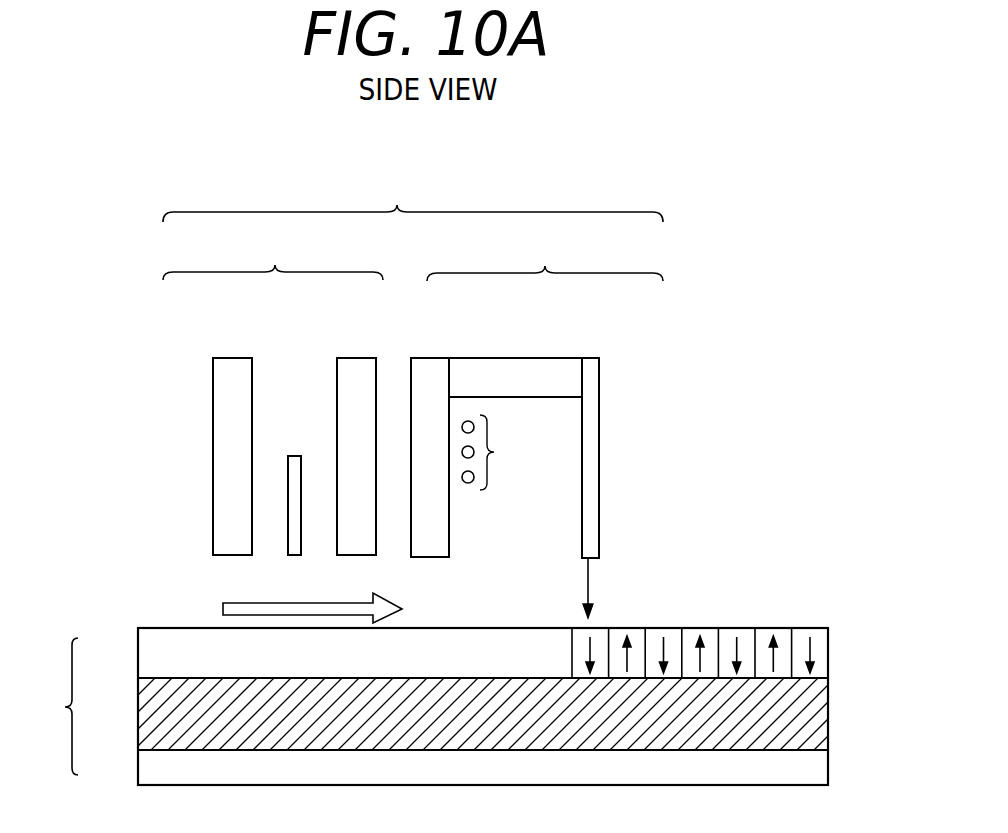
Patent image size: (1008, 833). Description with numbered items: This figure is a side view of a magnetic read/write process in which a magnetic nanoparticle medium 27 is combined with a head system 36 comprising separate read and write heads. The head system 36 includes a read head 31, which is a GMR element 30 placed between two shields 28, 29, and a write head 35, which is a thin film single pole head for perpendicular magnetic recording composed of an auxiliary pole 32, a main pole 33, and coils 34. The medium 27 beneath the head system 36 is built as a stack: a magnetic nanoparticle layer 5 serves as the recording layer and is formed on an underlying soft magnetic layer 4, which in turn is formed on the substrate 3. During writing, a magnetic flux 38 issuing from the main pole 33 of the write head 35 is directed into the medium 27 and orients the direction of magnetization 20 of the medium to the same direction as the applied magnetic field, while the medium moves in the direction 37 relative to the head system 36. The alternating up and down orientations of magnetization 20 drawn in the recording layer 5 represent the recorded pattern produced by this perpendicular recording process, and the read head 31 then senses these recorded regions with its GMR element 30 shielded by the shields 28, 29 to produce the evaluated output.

The head system 36 is at (413, 196).
The read head 31 is at (273, 257).
The write head 35 is at (545, 258).
The shield 28 is at (231, 366).
The GMR element 30 is at (292, 462).
The shield 29 is at (365, 370).
The auxiliary pole 32 is at (428, 370).
The coils 34 is at (496, 452).
The main pole 33 is at (600, 408).
The direction of medium movement 37 is at (393, 600).
The magnetic flux 38 is at (590, 583).
The magnetic nanoparticle medium 27 is at (429, 706).
The magnetic nanoparticle layer 5 is at (163, 657).
The soft magnetic layer 4 is at (157, 716).
The substrate 3 is at (158, 765).
The magnetization 20 is at (826, 640).